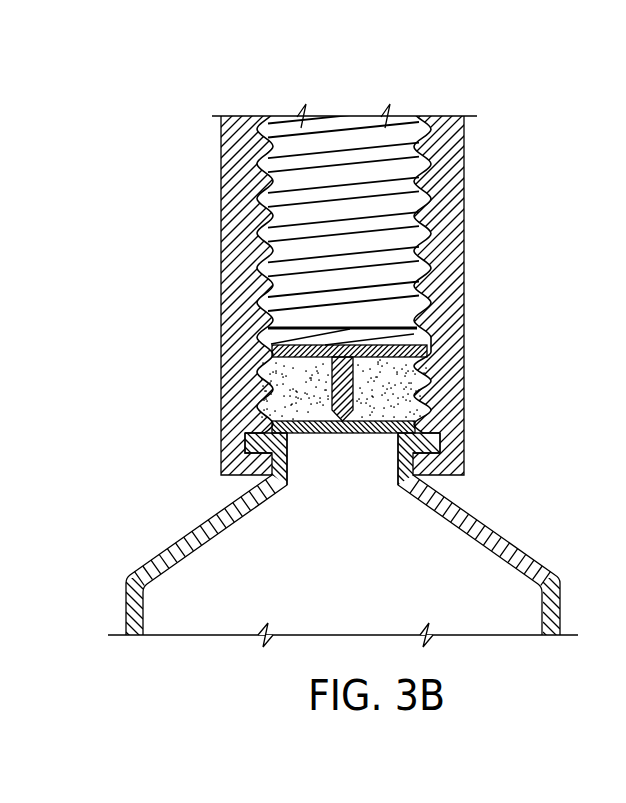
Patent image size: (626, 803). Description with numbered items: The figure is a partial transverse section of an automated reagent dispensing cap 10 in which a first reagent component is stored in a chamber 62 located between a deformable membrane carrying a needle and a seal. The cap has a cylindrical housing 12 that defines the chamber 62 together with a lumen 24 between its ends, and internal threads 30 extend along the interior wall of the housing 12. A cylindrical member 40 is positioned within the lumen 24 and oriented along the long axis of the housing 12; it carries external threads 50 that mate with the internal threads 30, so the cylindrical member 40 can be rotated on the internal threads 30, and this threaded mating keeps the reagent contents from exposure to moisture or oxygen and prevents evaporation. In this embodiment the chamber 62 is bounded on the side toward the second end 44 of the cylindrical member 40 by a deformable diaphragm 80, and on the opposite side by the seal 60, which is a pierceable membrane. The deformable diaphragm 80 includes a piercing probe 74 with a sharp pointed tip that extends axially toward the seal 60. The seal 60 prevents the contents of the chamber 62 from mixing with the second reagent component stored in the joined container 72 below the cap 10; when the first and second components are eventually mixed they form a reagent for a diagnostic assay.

The automated reagent dispensing cap 10 is at (171, 63).
The cylindrical housing 12 is at (457, 193).
The lumen 24 is at (290, 399).
The internal threads 30 is at (266, 338).
The cylindrical member 40 is at (268, 237).
The second end 44 is at (417, 327).
The external threads 50 is at (350, 166).
The seal 60 is at (351, 434).
The chamber 62 is at (418, 432).
The joined container 72 is at (551, 611).
The piercing probe 74 is at (353, 388).
The deformable diaphragm 80 is at (428, 350).